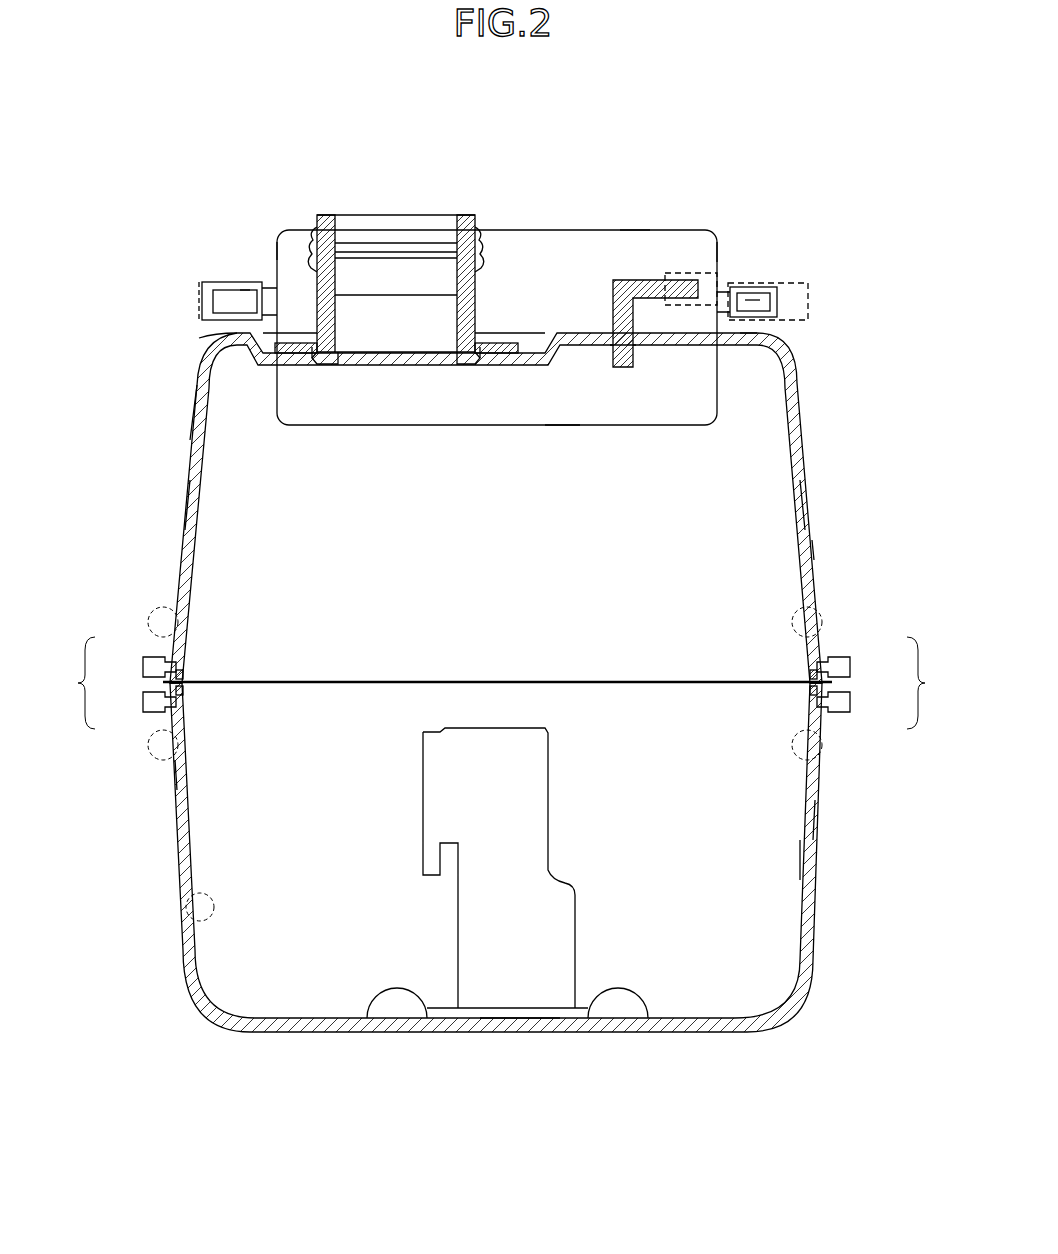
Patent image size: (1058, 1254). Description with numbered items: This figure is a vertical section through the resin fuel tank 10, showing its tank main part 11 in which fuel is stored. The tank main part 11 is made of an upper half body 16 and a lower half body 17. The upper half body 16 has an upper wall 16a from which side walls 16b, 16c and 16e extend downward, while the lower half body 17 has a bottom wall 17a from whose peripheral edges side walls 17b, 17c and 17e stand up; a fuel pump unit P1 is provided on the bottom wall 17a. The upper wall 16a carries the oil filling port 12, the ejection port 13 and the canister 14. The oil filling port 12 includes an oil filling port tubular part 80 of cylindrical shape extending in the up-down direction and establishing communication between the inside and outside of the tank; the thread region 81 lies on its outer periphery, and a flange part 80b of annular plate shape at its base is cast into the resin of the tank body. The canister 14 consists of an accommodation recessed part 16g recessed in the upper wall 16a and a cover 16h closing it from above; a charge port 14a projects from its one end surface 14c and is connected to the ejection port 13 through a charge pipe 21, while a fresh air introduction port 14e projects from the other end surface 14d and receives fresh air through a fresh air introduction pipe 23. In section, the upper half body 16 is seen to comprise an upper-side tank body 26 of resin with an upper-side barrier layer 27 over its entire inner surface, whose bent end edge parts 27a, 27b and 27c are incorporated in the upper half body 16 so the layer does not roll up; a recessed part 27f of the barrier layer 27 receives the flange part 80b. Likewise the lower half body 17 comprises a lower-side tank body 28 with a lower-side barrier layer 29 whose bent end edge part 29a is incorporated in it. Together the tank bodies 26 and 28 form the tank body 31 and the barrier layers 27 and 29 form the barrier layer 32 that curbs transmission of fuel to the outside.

The fuel tank 10 is at (162, 403).
The tank main part 11 is at (185, 382).
The oil filling port 12 is at (420, 229).
The ejection port 13 is at (633, 278).
The canister 14 is at (542, 219).
The charge port 14a is at (755, 293).
The one end surface 14c is at (728, 250).
The other end surface 14d is at (271, 243).
The fresh air introduction port 14e is at (242, 293).
The upper half body 16 is at (184, 479).
The upper wall 16a is at (765, 337).
The side wall 16b is at (820, 545).
The side wall 16c is at (180, 533).
The side wall 16e is at (715, 505).
The accommodation recessed part 16g is at (560, 427).
The cover 16h is at (634, 226).
The lower half body 17 is at (185, 829).
The bottom wall 17a is at (517, 1034).
The side wall 17b is at (820, 820).
The side wall 17c is at (182, 775).
The side wall 17e is at (715, 860).
The charge pipe 21 is at (795, 300).
The fresh air introduction pipe 23 is at (206, 290).
The upper-side tank body 26 is at (147, 663).
The upper-side barrier layer 27 is at (847, 665).
The end edge part 27a is at (330, 357).
The end edge part 27b is at (612, 345).
The end edge part 27c is at (186, 678).
The recessed part 27f is at (291, 367).
The lower-side tank body 28 is at (147, 702).
The lower-side barrier layer 29 is at (847, 705).
The end edge part 29a is at (186, 690).
The tank body 31 is at (70, 683).
The barrier layer 32 is at (932, 683).
The oil filling port tubular part 80 is at (481, 213).
The flange part 80b is at (505, 350).
The screw thread portion 81 is at (456, 205).
The fuel pump unit P1 is at (453, 952).